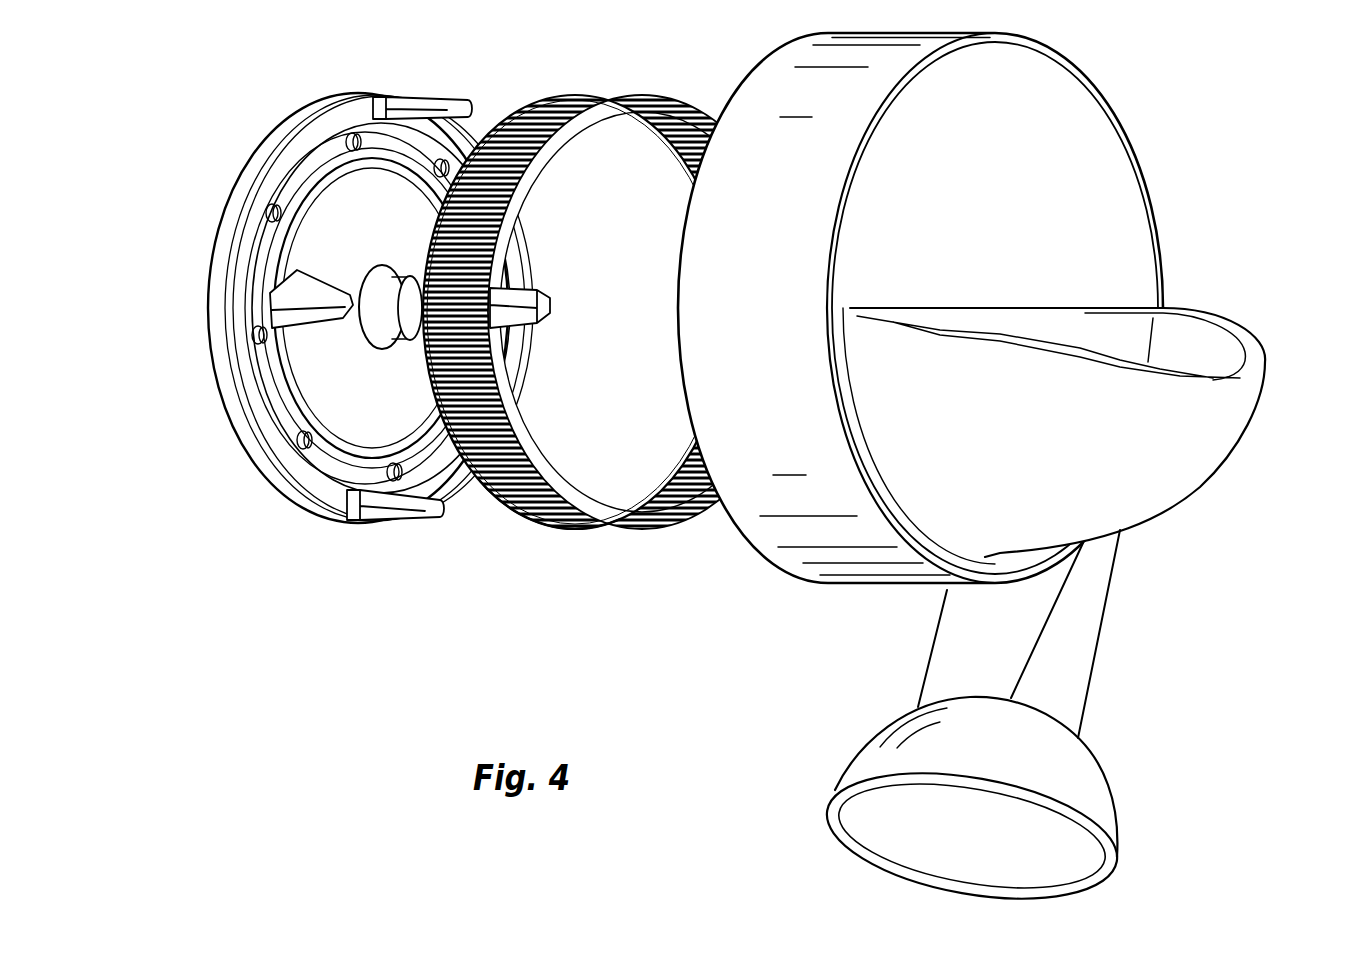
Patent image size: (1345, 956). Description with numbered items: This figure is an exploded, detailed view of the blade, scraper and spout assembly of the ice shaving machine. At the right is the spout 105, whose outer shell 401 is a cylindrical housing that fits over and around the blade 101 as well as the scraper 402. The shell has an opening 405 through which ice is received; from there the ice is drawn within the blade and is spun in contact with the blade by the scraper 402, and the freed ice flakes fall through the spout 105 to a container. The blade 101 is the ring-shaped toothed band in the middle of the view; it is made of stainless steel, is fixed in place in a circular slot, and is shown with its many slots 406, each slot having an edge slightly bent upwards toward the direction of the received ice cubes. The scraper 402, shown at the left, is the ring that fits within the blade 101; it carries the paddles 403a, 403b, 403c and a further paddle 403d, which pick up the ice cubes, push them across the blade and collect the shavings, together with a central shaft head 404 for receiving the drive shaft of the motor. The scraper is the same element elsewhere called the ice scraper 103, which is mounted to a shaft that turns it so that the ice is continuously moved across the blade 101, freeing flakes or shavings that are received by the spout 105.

The blade 101 is at (583, 95).
The ice scraper 103 is at (1081, 421).
The spout 105 is at (1082, 658).
The outer shell 401 is at (1062, 158).
The scraper 402 is at (310, 500).
The paddle 403a is at (387, 508).
The paddle 403b is at (300, 313).
The paddle 403c is at (413, 103).
The tab 403d is at (553, 313).
The shaft head 404 is at (383, 283).
The opening 405 is at (1170, 357).
The slots 406 is at (533, 513).